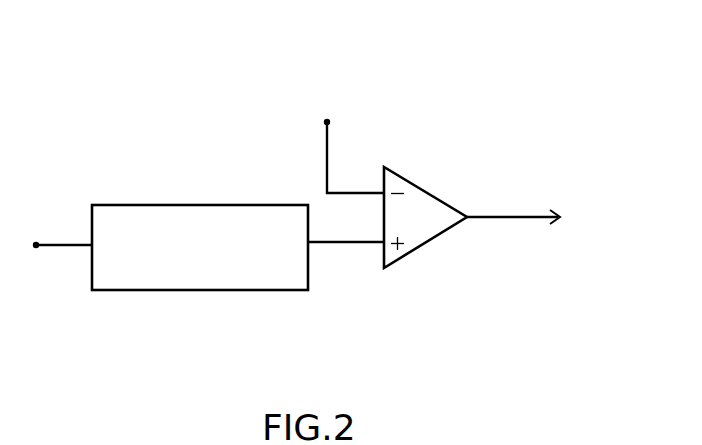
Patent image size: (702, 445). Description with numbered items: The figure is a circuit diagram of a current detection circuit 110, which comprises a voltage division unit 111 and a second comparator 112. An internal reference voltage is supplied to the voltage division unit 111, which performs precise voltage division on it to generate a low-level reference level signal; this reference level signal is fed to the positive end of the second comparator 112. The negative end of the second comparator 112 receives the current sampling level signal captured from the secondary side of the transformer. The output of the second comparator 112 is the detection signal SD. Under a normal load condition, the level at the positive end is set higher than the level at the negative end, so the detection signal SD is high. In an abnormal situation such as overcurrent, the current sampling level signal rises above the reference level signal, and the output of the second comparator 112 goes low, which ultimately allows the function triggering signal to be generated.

The current detection circuit 110 is at (138, 44).
The voltage division unit 111 is at (210, 290).
The second comparator 112 is at (428, 243).